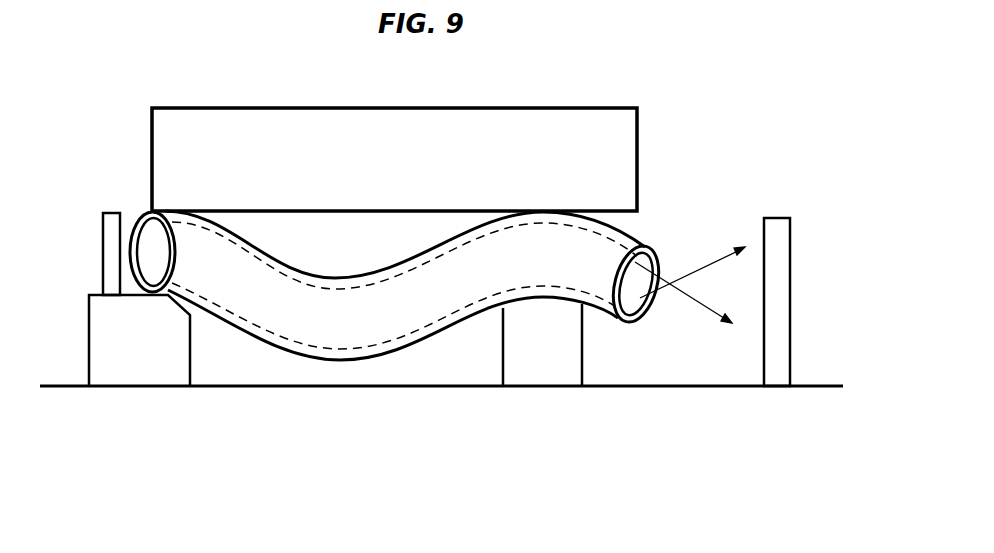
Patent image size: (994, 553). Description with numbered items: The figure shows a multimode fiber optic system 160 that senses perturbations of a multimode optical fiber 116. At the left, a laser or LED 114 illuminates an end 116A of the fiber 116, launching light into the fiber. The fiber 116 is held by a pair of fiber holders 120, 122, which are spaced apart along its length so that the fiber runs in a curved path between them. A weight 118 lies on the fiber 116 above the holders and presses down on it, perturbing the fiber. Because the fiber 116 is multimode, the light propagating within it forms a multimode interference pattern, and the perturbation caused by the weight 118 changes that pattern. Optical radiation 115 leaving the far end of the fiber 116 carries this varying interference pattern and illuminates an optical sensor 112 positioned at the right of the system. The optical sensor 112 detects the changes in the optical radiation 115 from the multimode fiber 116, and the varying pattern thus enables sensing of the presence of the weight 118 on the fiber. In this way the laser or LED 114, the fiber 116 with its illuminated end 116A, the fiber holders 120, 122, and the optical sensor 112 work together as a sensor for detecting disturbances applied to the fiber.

The fluid dispensing system 160 is at (658, 70).
The weight 118 is at (403, 166).
The multimode optical fiber 116 is at (510, 284).
The end of fiber 116A is at (182, 278).
The optical radiation 115 is at (703, 310).
The laser or LED 114 is at (103, 258).
The fiber holder 120 is at (110, 335).
The fiber holder 122 is at (562, 375).
The optical sensor 112 is at (790, 316).